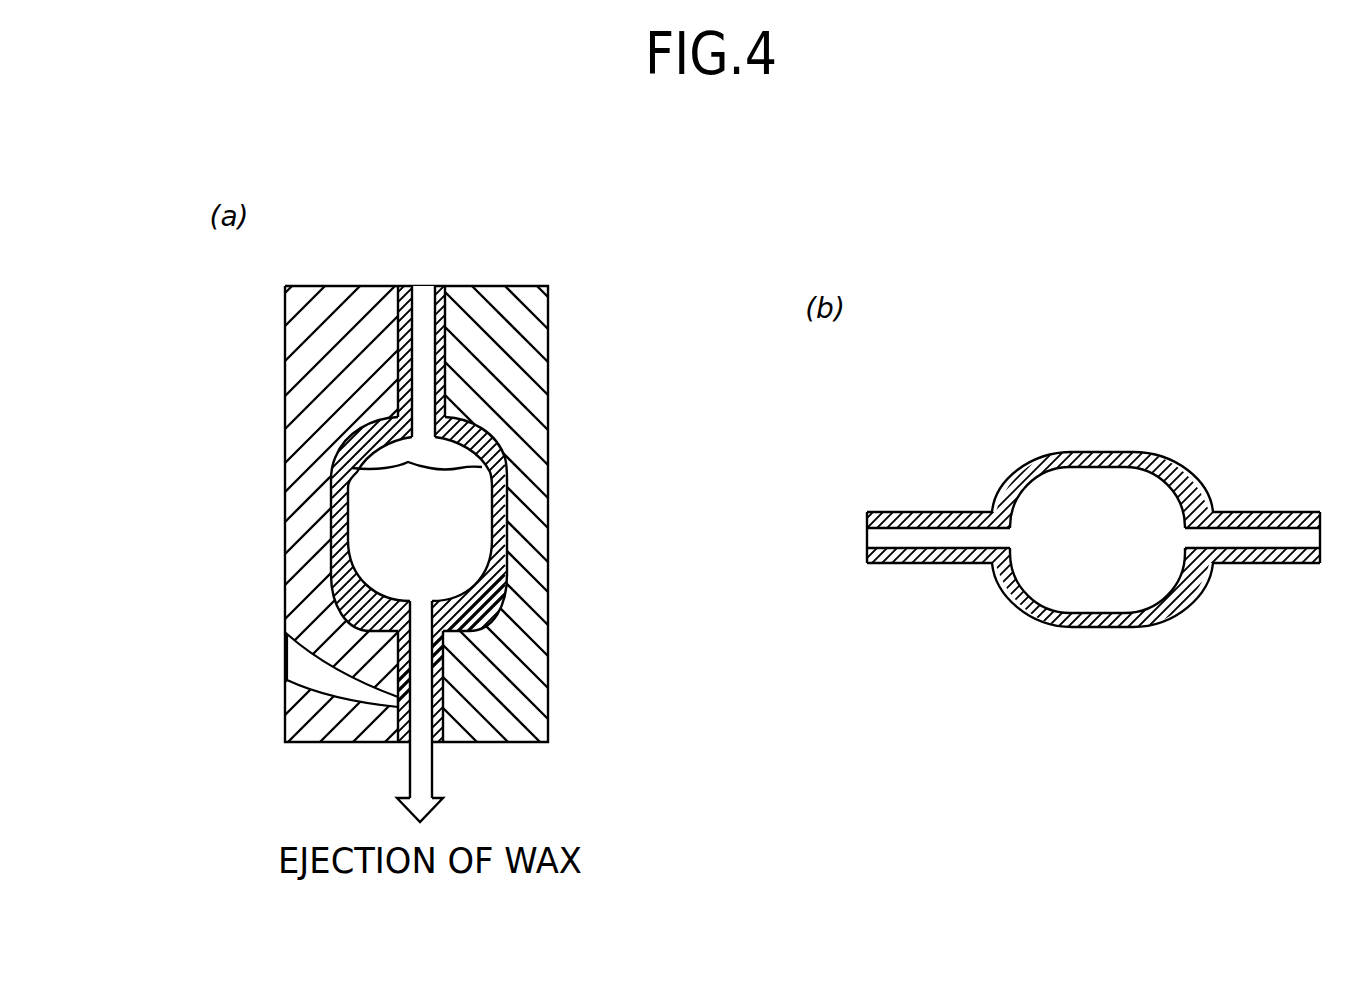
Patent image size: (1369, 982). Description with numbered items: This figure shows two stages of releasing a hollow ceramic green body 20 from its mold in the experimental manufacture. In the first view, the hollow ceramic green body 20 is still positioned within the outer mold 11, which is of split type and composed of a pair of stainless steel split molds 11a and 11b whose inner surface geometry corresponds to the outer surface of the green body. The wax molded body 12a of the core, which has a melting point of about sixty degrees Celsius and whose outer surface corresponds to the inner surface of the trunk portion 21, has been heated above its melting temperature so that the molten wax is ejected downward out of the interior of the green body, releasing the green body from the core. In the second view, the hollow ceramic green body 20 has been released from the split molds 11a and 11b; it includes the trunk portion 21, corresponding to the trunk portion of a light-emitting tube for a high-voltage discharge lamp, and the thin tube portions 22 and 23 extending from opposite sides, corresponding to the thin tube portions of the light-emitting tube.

The outer mold 11 is at (415, 472).
The split mold 11a is at (312, 514).
The split mold 11b is at (524, 514).
The wax molded body 12a is at (390, 563).
The hollow ceramic green body 20 is at (333, 482).
The trunk portion 21 is at (506, 522).
The thin tube portion 22 is at (481, 743).
The thin tube portion 23 is at (402, 323).